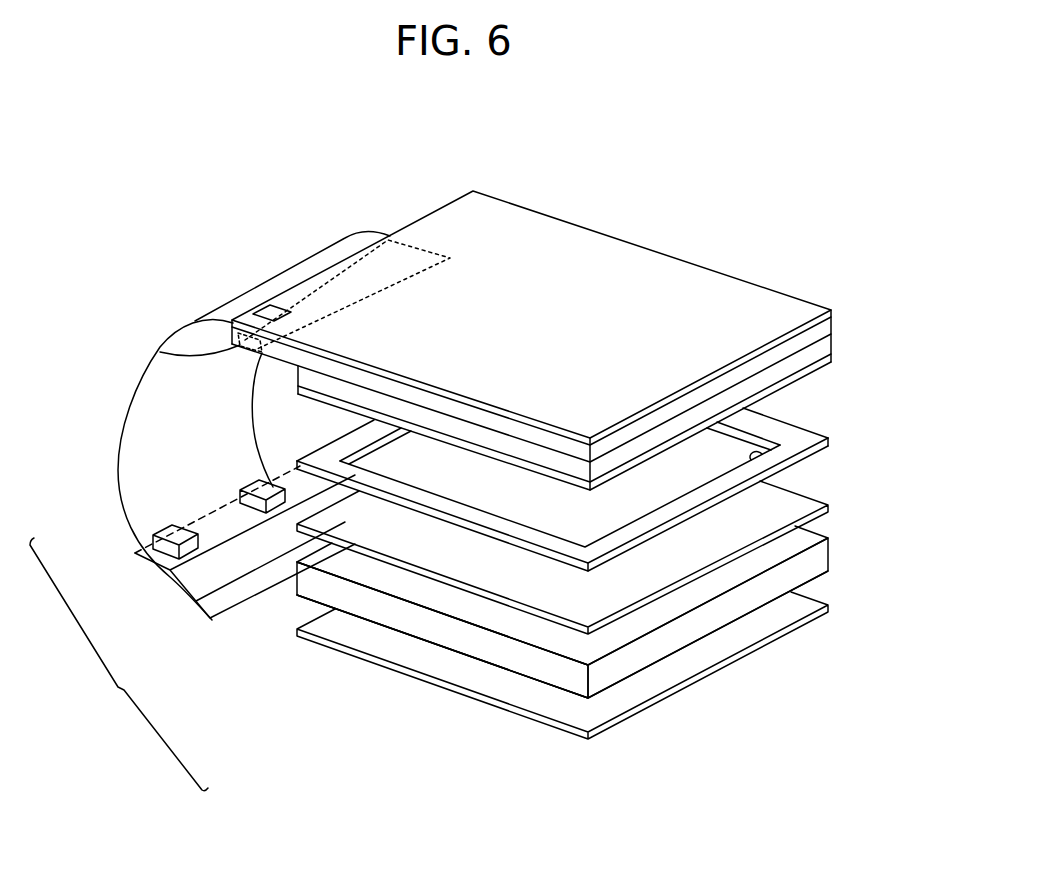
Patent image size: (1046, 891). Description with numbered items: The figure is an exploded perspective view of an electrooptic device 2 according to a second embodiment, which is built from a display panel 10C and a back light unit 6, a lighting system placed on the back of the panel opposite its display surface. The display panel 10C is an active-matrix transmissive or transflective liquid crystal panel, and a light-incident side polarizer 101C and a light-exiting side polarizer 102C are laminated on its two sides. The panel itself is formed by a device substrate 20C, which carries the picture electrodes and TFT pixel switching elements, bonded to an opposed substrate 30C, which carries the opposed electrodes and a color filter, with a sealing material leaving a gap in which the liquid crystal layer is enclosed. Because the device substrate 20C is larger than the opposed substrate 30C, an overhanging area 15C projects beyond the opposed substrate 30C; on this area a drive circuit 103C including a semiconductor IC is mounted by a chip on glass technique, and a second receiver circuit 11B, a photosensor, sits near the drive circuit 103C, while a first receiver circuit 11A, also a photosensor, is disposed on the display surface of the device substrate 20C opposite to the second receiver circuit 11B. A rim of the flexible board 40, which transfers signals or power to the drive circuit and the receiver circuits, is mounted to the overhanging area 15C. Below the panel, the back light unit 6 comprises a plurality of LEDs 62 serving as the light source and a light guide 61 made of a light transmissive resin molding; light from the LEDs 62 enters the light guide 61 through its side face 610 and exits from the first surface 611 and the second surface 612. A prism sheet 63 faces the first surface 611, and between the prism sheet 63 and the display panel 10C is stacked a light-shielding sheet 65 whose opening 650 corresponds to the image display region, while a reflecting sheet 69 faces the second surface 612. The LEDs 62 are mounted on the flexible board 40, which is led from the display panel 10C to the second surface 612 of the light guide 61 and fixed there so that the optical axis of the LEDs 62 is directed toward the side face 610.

The electrooptic device 2 is at (825, 134).
The display panel 10C is at (847, 306).
The light-incident side polarizer 101C is at (815, 372).
The light-exiting side polarizer 102C is at (808, 325).
The device substrate 20C is at (783, 352).
The opposed substrate 30C is at (767, 382).
The flexible board 40 is at (328, 260).
The drive circuit 103C is at (440, 248).
The first receiver circuit 11A is at (268, 312).
The second receiver circuit 11B is at (247, 353).
The overhanging area 15C is at (177, 356).
The opening 650 is at (762, 457).
The light guide 61 is at (296, 594).
The side face 610 is at (296, 578).
The first surface 611 is at (372, 612).
The second surface 612 is at (296, 604).
The reflecting sheet 69 is at (310, 643).
The prism sheet 63 is at (207, 592).
The light-shielding sheet 65 is at (193, 573).
The LEDs 62 is at (260, 480).
The back light unit 6 is at (122, 692).